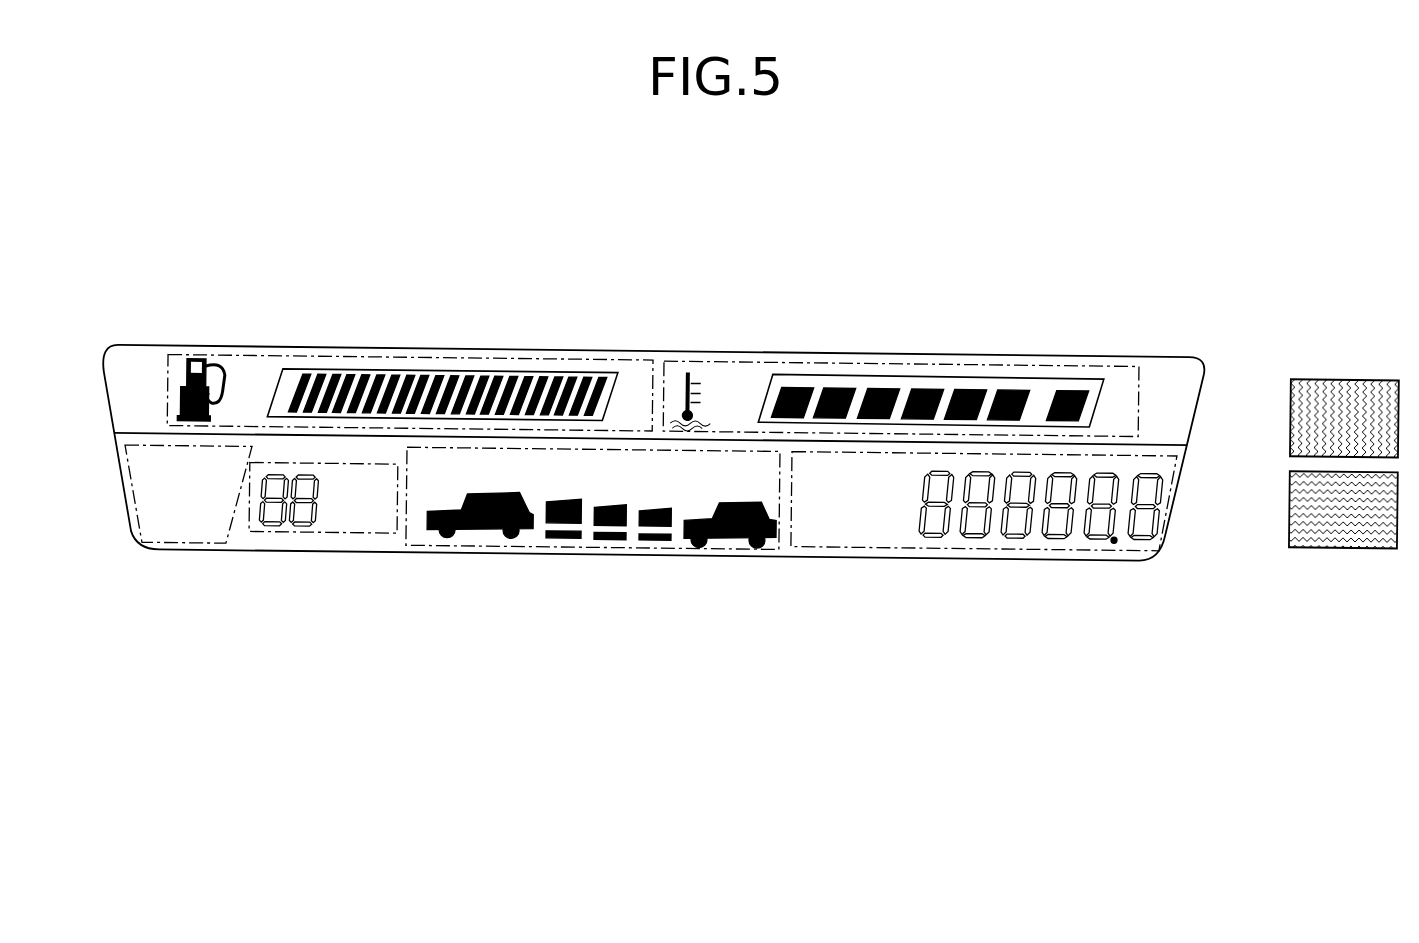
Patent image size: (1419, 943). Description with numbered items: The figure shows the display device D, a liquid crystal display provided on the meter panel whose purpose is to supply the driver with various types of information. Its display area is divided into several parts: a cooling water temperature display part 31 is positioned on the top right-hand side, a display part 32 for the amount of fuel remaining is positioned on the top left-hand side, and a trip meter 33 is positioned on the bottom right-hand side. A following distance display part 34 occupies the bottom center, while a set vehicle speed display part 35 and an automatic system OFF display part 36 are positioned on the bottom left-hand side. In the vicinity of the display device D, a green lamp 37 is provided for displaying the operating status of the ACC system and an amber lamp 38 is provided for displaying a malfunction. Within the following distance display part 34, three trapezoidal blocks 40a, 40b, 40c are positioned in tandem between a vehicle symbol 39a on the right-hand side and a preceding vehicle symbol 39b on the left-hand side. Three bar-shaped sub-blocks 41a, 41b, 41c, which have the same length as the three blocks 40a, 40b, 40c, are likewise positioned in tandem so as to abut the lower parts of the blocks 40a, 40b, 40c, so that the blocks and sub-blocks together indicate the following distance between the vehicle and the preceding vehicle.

The display device D is at (745, 316).
The cooling water temperature display part 31 is at (1072, 361).
The display part for the amount of fuel remaining 32 is at (452, 360).
The trip meter 33 is at (1098, 556).
The following distance display part 34 is at (604, 545).
The set vehicle speed display part 35 is at (333, 540).
The automatic system OFF display part 36 is at (228, 538).
The green lamp 37 is at (1290, 395).
The amber lamp 38 is at (1288, 511).
The vehicle symbol 39a is at (730, 538).
The preceding vehicle symbol 39b is at (482, 534).
The trapezoidal block 40a is at (651, 509).
The trapezoidal block 40b is at (627, 518).
The trapezoidal block 40c is at (597, 487).
The bar-shaped sub-block 41a is at (663, 541).
The bar-shaped sub-block 41b is at (605, 541).
The bar-shaped sub-block 41c is at (553, 540).